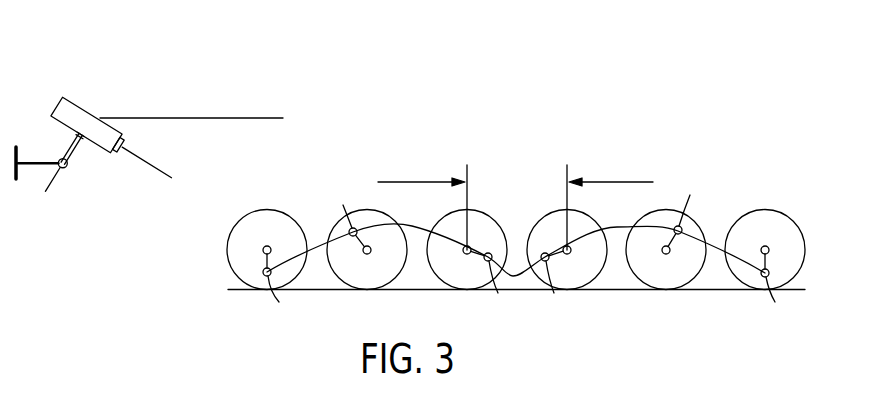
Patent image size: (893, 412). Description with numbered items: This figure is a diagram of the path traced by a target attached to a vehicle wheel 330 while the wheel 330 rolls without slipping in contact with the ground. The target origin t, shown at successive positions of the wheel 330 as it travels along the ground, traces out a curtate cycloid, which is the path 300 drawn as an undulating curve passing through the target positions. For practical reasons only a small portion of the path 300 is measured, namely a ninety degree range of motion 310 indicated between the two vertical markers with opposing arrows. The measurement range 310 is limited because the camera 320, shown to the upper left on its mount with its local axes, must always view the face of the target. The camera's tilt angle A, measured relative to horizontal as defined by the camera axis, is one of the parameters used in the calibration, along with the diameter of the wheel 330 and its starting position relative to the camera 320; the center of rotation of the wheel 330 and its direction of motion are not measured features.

The camera 320 is at (59, 101).
The camera tilt angle A is at (111, 118).
The wheel 330 is at (228, 240).
The path 300 is at (325, 244).
The range of motion 310 is at (520, 186).